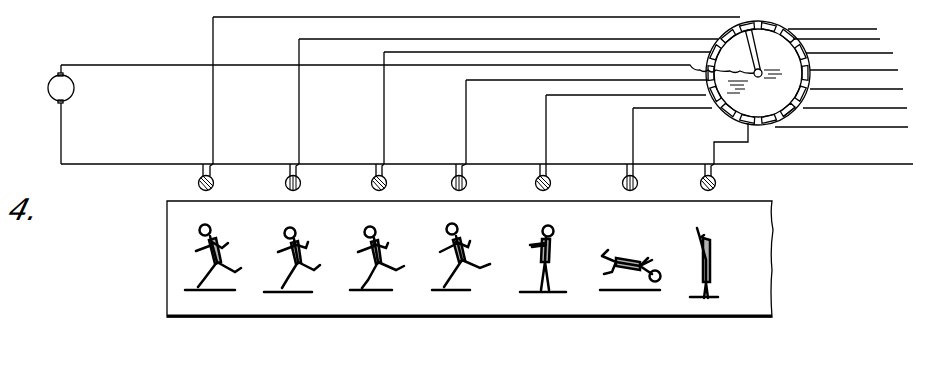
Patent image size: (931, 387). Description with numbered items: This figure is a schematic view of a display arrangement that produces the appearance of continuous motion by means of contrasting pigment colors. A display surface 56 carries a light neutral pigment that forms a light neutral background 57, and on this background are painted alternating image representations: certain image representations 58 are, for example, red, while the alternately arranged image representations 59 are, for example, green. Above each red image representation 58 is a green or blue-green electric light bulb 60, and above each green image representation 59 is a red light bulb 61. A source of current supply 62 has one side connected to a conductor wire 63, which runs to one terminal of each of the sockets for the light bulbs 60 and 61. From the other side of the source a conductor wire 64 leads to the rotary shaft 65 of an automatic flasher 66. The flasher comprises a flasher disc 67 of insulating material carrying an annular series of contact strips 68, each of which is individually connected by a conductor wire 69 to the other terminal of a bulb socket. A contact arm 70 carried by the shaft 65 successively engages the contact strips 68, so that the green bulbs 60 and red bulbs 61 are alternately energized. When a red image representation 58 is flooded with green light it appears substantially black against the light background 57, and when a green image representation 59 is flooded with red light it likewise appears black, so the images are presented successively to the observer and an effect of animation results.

The display surface 56 is at (760, 267).
The light neutral background 57 is at (752, 305).
The image representations 58 is at (220, 240).
The image representations 59 is at (300, 246).
The electric light bulb 60 is at (214, 185).
The red light bulb 61 is at (301, 185).
The source of current supply 62 is at (75, 88).
The conductor wire 63 is at (145, 163).
The conductor wire 64 is at (161, 68).
The rotary shaft 65 is at (762, 68).
The automatic flasher 66 is at (783, 62).
The flasher disc 67 is at (778, 77).
The contact strips 68 is at (802, 107).
The conductor wires 69 is at (669, 110).
The contact arm 70 is at (755, 38).